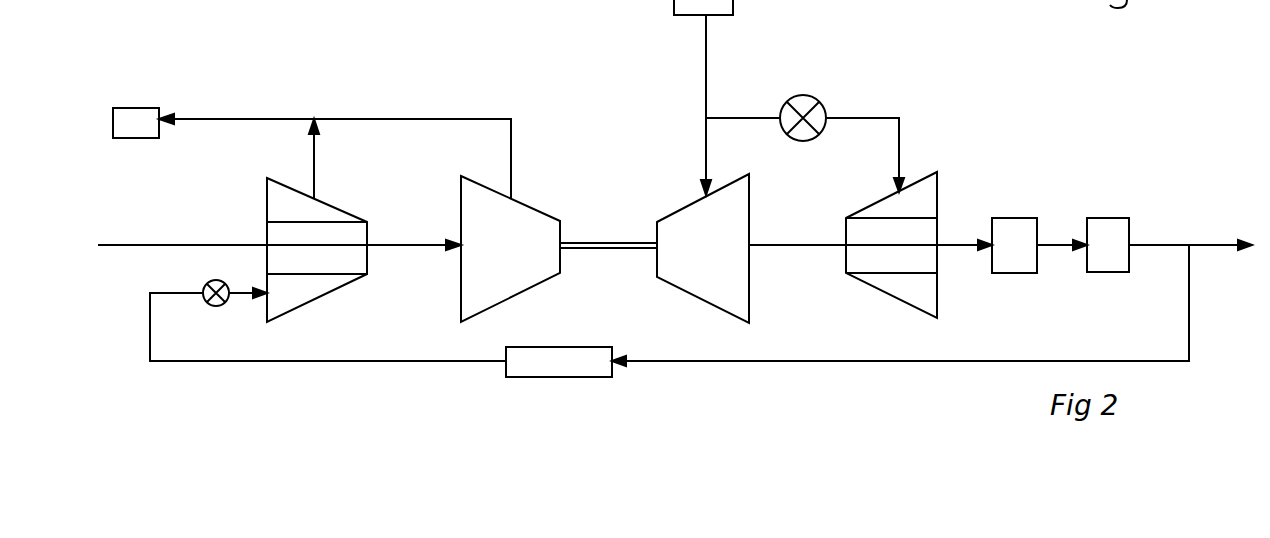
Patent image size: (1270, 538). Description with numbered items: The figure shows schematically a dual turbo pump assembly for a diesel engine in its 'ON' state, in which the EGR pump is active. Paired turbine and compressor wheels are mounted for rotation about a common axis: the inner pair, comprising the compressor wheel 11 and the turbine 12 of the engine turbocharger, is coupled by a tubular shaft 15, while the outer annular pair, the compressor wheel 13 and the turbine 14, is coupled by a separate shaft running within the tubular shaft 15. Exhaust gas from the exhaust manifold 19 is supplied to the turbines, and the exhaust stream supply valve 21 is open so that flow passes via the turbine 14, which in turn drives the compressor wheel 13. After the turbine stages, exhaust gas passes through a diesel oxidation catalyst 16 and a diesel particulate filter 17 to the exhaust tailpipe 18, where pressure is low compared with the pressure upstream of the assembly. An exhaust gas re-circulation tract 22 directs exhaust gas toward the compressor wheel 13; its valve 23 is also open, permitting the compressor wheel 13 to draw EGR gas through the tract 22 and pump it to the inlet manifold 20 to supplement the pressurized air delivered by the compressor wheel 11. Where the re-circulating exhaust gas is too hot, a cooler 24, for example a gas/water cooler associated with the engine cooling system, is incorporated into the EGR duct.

The compressor wheel 11 is at (537, 218).
The turbine 12 is at (677, 208).
The compressor wheel 13 is at (346, 222).
The turbine 14 is at (940, 180).
The tubular shaft 15 is at (617, 240).
The diesel oxidation catalyst 16 is at (1025, 218).
The diesel particulate filter 17 is at (1118, 218).
The exhaust tailpipe 18 is at (1212, 242).
The exhaust manifold 19 is at (703, 97).
The inlet manifold 20 is at (312, 153).
The exhaust stream supply valve 21 is at (845, 78).
The exhaust gas re-circulation tract 22 is at (850, 362).
The valve 23 is at (200, 290).
The cooler 24 is at (548, 378).